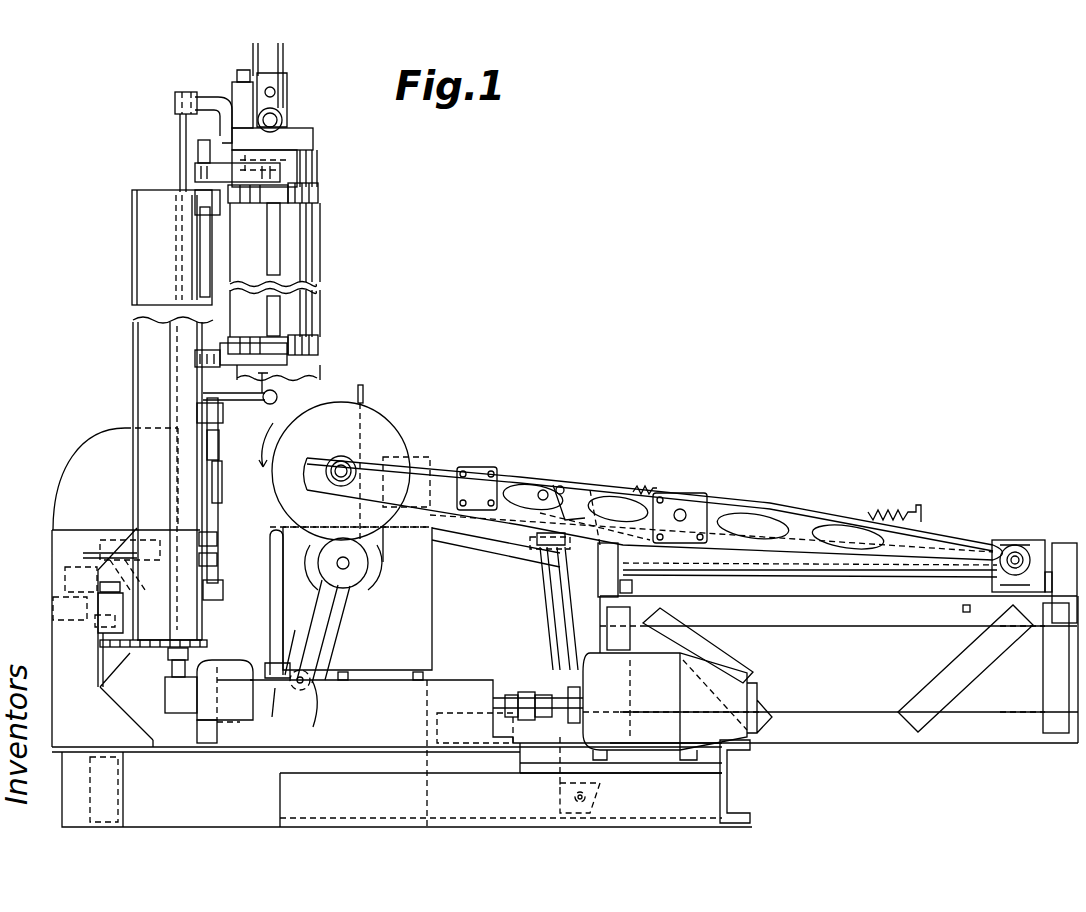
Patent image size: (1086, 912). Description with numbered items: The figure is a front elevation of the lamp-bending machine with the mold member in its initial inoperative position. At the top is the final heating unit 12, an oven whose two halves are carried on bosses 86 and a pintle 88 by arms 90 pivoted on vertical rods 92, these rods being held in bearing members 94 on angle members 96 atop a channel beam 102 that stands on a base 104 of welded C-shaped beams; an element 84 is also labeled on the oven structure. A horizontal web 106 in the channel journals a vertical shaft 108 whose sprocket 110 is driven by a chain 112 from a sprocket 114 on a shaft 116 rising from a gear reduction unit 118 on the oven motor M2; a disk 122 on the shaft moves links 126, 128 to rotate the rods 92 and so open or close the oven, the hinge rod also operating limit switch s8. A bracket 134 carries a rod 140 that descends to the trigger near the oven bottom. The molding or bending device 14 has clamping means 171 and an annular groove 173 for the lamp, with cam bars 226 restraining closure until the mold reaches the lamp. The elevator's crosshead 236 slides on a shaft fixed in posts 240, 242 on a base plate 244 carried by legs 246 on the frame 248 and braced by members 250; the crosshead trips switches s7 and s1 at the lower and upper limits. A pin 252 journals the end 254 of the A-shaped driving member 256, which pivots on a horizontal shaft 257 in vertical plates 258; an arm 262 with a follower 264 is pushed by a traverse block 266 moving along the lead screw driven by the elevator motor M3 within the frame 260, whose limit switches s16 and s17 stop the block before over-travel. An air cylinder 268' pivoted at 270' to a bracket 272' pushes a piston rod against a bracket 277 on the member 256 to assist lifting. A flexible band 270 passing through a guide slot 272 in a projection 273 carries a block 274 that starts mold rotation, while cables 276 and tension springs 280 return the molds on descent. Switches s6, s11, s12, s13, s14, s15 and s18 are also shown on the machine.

The final heating unit 12 is at (343, 228).
The molding or bending device 14 is at (440, 434).
The clamp ring 84 is at (312, 190).
The bosses 86 is at (318, 200).
The pintle 88 is at (282, 256).
The arms 90 is at (205, 163).
The vertical rod 92 is at (200, 256).
The bearing members 94 is at (200, 203).
The angle members 96 is at (140, 232).
The channel beam 102 is at (60, 560).
The base 104 is at (407, 753).
The horizontal web 106 is at (72, 578).
The vertical shaft 108 is at (100, 590).
The sprocket 110 is at (95, 624).
The chain 112 is at (105, 686).
The sprocket 114 is at (207, 643).
The shaft 116 is at (173, 658).
The gear reduction unit 118 is at (180, 690).
The disk 122 is at (126, 587).
The link 126 is at (133, 540).
The link 128 is at (140, 520).
The bracket 134 is at (226, 97).
The rod 140 is at (181, 112).
The clamping means 171 is at (239, 420).
The annular groove 173 is at (395, 430).
The cam bars 226 is at (365, 400).
The crosshead 236 is at (1005, 540).
The post 240 is at (1064, 543).
The post 242 is at (548, 570).
The base plate 244 is at (843, 620).
The legs 246 is at (1045, 688).
The frame 248 is at (950, 738).
The cross-brace members 250 is at (925, 690).
The pin 252 is at (685, 510).
The end of driving member 254 is at (663, 493).
The A-shaped driving member 256 is at (465, 562).
The horizontal shaft 257 is at (350, 580).
The vertical plates 258 is at (430, 652).
The frame 260 is at (467, 680).
The arm 262 is at (328, 625).
The follower 264 is at (314, 727).
The traverse block 266 is at (230, 747).
The air cylinder 268' is at (561, 596).
The flexible band 270 is at (234, 563).
The lower end pivot 270' is at (619, 793).
The guide slot 272 is at (244, 601).
The bracket 272' is at (546, 775).
The projection 273 is at (325, 578).
The block 274 is at (287, 660).
The cables 276 is at (480, 466).
The bracket 277 is at (560, 486).
The tension springs 280 is at (872, 512).
The oven motor M2 is at (250, 657).
The elevator motor M3 is at (632, 706).
The limit switch s1 is at (633, 587).
The switch s6 is at (213, 457).
The limit switch s7 is at (1048, 572).
The limit switch s8 is at (222, 487).
The switch s11 is at (217, 471).
The switch s12 is at (222, 500).
The switch s13 is at (1047, 605).
The switch s14 is at (657, 598).
The switch s15 is at (963, 609).
The limit switch s16 is at (280, 716).
The limit switch s17 is at (420, 681).
The switch s18 is at (343, 681).